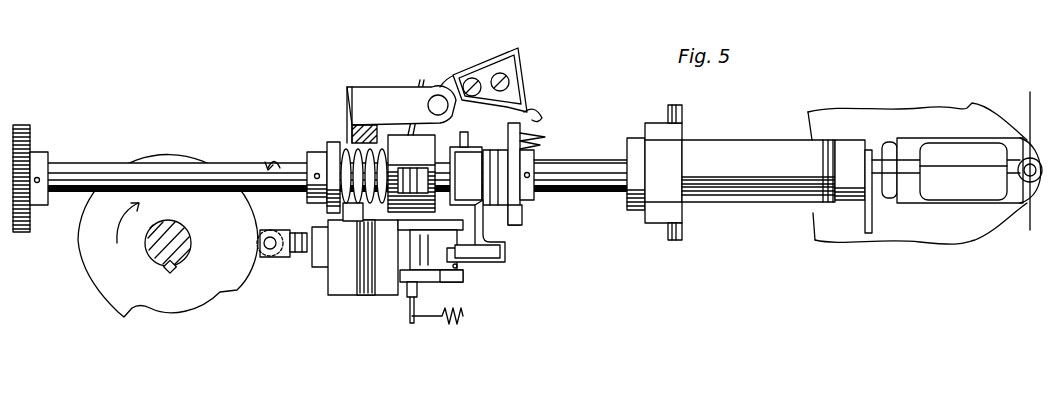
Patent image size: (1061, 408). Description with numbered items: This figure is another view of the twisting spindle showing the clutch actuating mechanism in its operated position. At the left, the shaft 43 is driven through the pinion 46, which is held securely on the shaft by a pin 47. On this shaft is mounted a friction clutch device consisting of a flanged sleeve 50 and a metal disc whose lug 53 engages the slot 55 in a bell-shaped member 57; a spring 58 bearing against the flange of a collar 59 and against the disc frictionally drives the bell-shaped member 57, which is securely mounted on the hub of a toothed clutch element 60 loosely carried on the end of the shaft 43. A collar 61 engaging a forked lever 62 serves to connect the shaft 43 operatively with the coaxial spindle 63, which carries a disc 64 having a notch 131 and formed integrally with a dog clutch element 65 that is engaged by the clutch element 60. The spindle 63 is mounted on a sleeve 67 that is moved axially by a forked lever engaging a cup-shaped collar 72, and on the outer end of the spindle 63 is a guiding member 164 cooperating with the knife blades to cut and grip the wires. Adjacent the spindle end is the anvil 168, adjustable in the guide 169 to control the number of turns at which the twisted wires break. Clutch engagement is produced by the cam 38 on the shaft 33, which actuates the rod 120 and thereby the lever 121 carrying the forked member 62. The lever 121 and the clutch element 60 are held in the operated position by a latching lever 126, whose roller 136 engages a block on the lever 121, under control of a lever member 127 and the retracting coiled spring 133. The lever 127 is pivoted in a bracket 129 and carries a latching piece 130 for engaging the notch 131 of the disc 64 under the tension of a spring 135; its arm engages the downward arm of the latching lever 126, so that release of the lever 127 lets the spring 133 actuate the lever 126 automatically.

The shaft 33 is at (157, 252).
The cam 38 is at (180, 305).
The shaft 43 is at (78, 168).
The pinion 46 is at (27, 140).
The pin 47 is at (37, 185).
The flanged sleeve 50 is at (340, 148).
The lug 53 is at (398, 133).
The slot 55 is at (418, 180).
The bell-shaped member 57 is at (408, 97).
The spring 58 is at (350, 212).
The collar 59 is at (324, 150).
The toothed clutch element 60 is at (522, 168).
The collar 61 is at (479, 176).
The forked lever 62 is at (470, 140).
The spindle 63 is at (602, 163).
The disc 64 is at (522, 130).
The dog clutch element 65 is at (523, 210).
The sleeve 67 is at (762, 146).
The cup-shaped collar 72 is at (670, 140).
The rod 120 is at (483, 247).
The lever 121 is at (507, 248).
The latching lever 126 is at (390, 260).
The lever member 127 is at (485, 62).
The bracket 129 is at (372, 88).
The latching piece 130 is at (518, 92).
The notch 131 is at (533, 190).
The coiled spring 133 is at (463, 313).
The spring 135 is at (532, 116).
The roller 136 is at (457, 258).
The guiding member 164 is at (867, 227).
The anvil 168 is at (947, 148).
The guide 169 is at (973, 187).